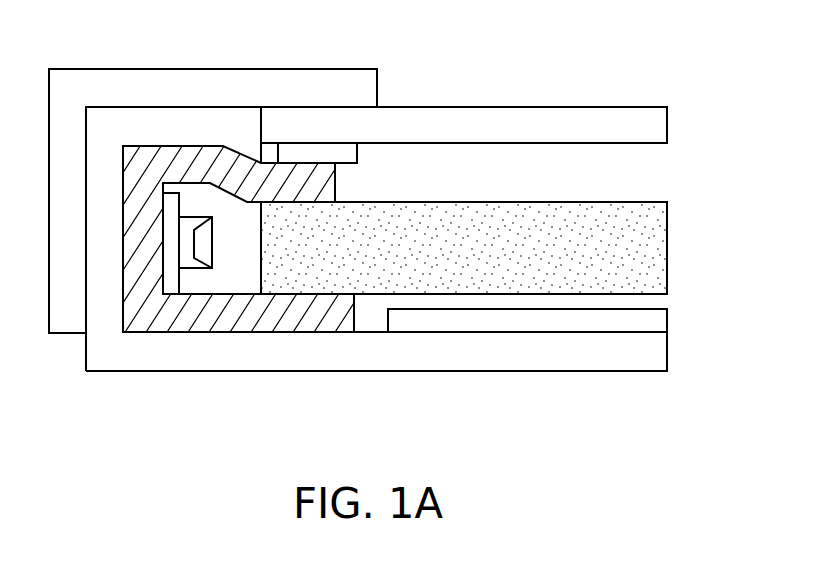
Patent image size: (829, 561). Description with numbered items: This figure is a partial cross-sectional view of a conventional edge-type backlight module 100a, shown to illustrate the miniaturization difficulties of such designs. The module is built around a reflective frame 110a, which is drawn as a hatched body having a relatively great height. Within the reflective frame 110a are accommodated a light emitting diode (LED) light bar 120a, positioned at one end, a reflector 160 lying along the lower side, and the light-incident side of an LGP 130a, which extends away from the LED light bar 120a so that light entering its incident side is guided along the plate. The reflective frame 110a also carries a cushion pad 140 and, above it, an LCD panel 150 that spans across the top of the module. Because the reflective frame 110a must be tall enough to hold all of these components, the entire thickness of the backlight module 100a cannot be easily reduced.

The backlight module 100a is at (379, 249).
The reflective frame 110a is at (135, 305).
The light emitting diode (LED) light bar 120a is at (191, 267).
The LGP 130a is at (562, 277).
The cushion pad 140 is at (347, 155).
The LCD panel 150 is at (607, 120).
The reflector 160 is at (492, 325).